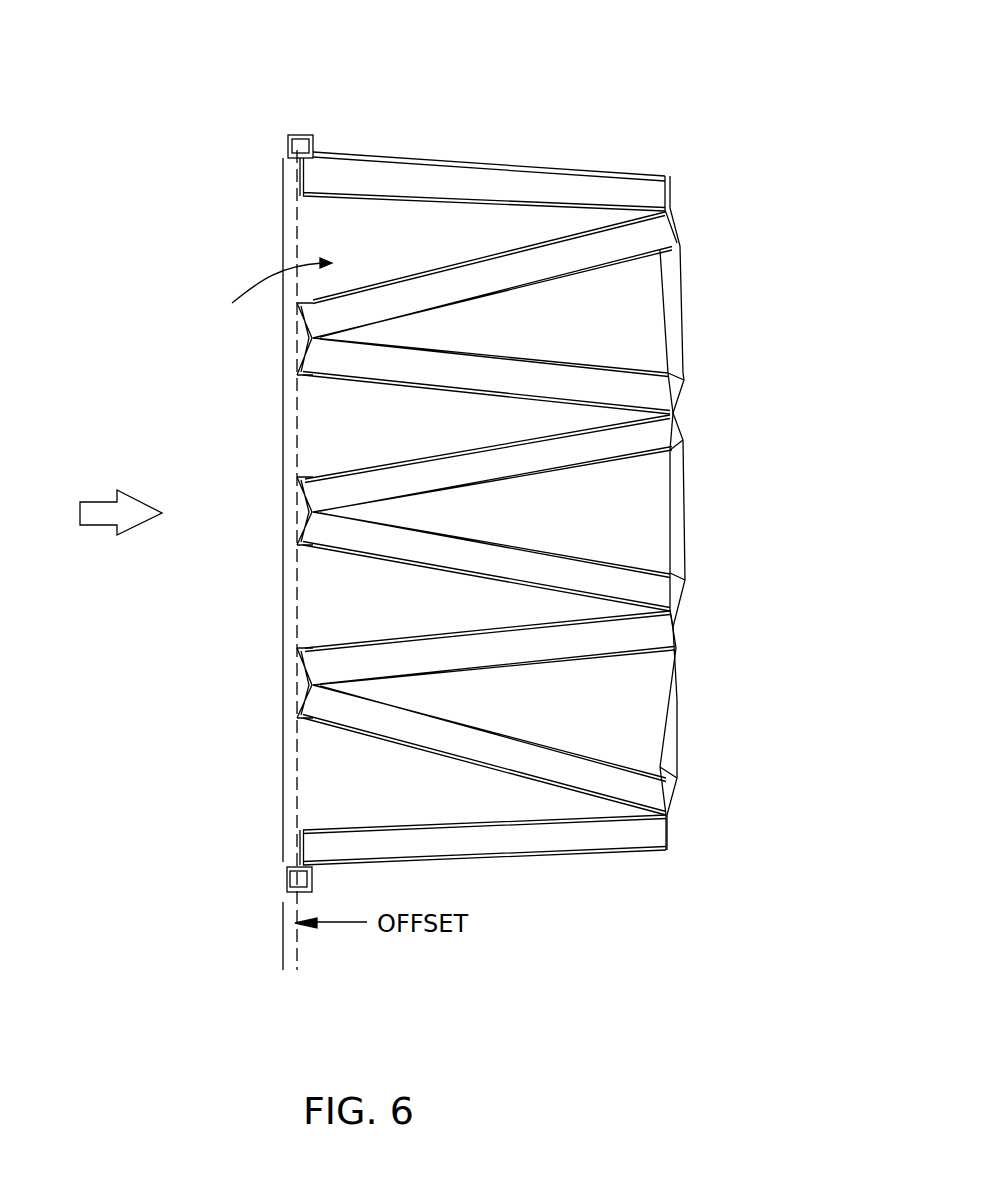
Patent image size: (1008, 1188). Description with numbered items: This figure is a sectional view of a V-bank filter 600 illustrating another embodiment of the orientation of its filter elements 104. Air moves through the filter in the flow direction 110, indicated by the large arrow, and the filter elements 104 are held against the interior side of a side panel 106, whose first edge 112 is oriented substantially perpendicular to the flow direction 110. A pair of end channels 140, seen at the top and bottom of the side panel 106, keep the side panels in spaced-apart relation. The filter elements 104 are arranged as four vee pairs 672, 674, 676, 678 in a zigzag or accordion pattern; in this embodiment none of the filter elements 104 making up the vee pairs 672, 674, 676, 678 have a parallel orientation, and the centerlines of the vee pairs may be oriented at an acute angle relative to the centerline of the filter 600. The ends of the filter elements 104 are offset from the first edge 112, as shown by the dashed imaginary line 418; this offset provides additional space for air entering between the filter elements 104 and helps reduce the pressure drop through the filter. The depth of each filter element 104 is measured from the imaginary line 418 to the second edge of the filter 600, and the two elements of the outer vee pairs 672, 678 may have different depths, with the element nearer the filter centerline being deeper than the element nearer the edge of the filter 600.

The V-bank filter 600 is at (596, 43).
The filter element 104 is at (517, 190).
The side panel 106 is at (259, 291).
The flow direction 110 is at (97, 526).
The first edge 112 is at (283, 228).
The end channel 140 is at (302, 133).
The phantom line 418 is at (297, 937).
The vee pair 672 is at (542, 284).
The vee pair 674 is at (540, 362).
The vee pair 676 is at (540, 552).
The vee pair 678 is at (540, 742).